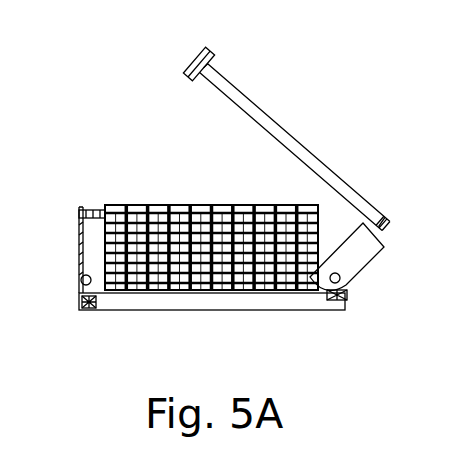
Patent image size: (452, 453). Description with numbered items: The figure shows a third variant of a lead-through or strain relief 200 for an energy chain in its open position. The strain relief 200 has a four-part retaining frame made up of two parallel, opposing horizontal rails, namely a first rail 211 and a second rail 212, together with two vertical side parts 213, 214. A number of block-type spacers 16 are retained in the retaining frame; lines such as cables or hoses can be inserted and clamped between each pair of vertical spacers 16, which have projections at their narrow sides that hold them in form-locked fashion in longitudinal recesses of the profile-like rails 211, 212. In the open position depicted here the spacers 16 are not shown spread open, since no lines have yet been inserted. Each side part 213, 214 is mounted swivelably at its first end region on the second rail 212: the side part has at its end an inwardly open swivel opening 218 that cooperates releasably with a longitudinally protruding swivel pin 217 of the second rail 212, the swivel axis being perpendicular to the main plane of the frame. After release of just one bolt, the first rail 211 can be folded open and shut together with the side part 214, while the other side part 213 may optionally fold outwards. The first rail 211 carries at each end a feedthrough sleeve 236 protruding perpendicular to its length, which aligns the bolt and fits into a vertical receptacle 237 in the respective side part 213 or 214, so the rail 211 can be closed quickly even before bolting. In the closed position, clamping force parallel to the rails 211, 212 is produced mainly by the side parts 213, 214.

The strain relief 200 is at (108, 79).
The first rail 211 is at (297, 99).
The second rail 212 is at (202, 310).
The side part 213 is at (82, 241).
The side part 214 is at (370, 242).
The swivel pin 217 is at (81, 280).
The swivel opening 218 is at (341, 268).
The feedthrough sleeve 236 is at (191, 68).
The vertical receptacle 237 is at (95, 207).
The spacer 16 is at (128, 208).